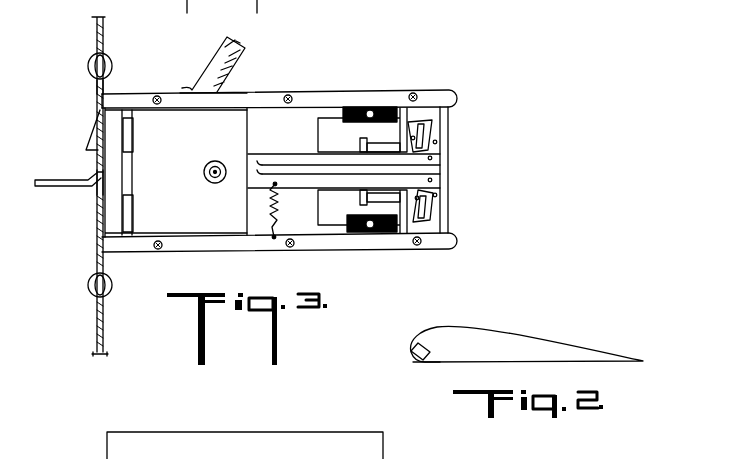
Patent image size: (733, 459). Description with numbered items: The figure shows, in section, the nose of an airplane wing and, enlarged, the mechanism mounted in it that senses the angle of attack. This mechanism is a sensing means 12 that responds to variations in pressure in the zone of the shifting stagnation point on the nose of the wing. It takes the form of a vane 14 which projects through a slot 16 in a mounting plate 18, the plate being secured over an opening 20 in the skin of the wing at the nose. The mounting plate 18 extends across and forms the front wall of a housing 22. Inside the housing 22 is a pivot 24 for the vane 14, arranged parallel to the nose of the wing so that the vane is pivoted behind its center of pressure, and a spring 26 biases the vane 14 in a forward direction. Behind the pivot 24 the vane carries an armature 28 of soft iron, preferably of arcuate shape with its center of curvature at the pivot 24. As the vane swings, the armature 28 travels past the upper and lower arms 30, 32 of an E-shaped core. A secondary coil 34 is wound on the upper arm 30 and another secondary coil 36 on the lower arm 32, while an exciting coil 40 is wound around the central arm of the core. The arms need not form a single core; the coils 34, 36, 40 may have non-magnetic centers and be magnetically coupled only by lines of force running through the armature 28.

In FIG. 3, the sensing means 12 is at (87, 219).
In FIG. 2, the sensing means 12 is at (408, 364).
In FIG. 3, the vane 14 is at (67, 180).
In FIG. 2, the vane 14 is at (415, 365).
In FIG. 3, the slot 16 is at (97, 190).
In FIG. 3, the mounting plate 18 is at (103, 88).
In FIG. 3, the opening 20 is at (100, 87).
In FIG. 3, the housing 22 is at (315, 90).
In FIG. 3, the pivot 24 is at (213, 182).
In FIG. 3, the spring 26 is at (267, 230).
In FIG. 3, the armature 28 is at (423, 128).
In FIG. 3, the upper arm 30 is at (333, 108).
In FIG. 3, the lower arm 32 is at (333, 230).
In FIG. 3, the secondary coil 34 is at (383, 112).
In FIG. 3, the secondary coil 36 is at (387, 228).
In FIG. 3, the exciting coil 40 is at (360, 136).